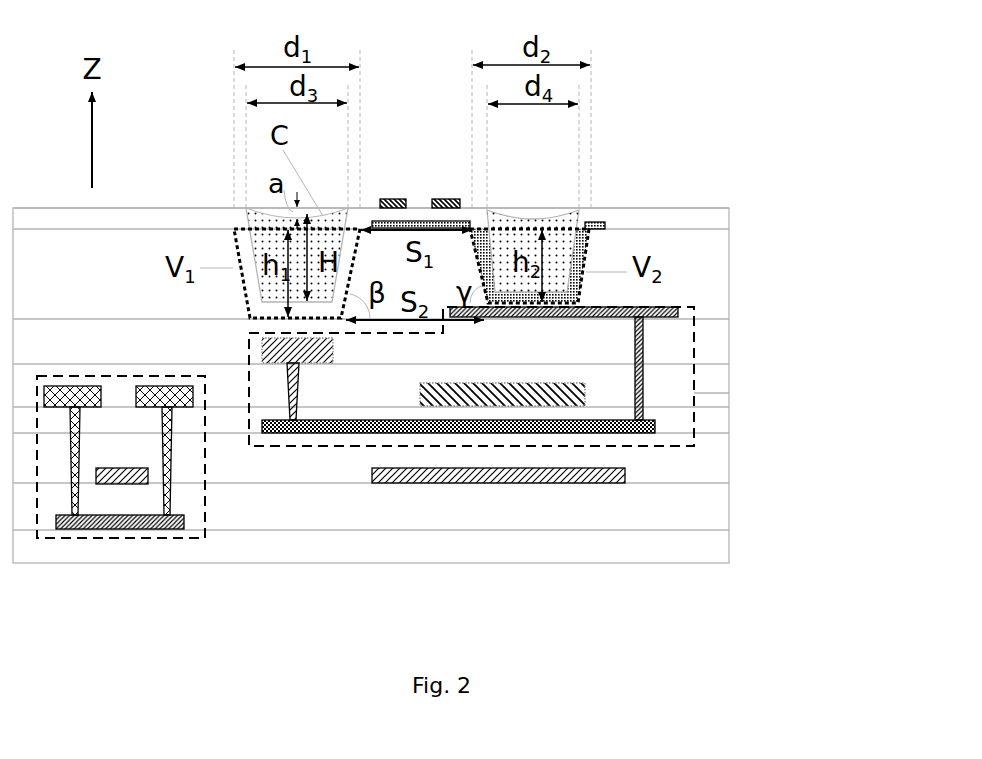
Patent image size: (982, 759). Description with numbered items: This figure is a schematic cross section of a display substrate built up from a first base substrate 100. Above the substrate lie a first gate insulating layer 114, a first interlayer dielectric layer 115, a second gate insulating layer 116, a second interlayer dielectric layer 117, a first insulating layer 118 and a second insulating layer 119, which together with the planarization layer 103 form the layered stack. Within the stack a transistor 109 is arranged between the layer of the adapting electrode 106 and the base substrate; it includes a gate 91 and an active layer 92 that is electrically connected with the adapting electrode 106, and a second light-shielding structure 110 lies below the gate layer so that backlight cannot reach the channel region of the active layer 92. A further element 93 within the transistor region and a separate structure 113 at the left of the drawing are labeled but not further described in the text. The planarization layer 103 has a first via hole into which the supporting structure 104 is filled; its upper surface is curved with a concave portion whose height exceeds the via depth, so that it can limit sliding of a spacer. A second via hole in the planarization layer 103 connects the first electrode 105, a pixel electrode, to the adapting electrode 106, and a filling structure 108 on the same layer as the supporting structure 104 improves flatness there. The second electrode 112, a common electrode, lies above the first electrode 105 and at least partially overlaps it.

The first base substrate 100 is at (729, 544).
The first gate insulating layer 114 is at (729, 500).
The first interlayer dielectric layer 115 is at (729, 456).
The second gate insulating layer 116 is at (729, 423).
The transistor 109 is at (729, 394).
The second interlayer dielectric layer 117 is at (729, 375).
The first insulating layer 118 is at (729, 334).
The planarization layer 103 is at (729, 265).
The second insulating layer 119 is at (729, 216).
The adapting electrode 106 is at (697, 310).
The active layer 92 is at (471, 479).
The drain electrode 93 is at (297, 379).
The gate 91 is at (502, 395).
The second light-shielding structure 110 is at (471, 483).
The switching transistor 113 is at (115, 538).
The second electrode 112 is at (397, 199).
The supporting structure 104 is at (332, 216).
The filling structure 108 is at (532, 212).
The first electrode 105 is at (605, 220).